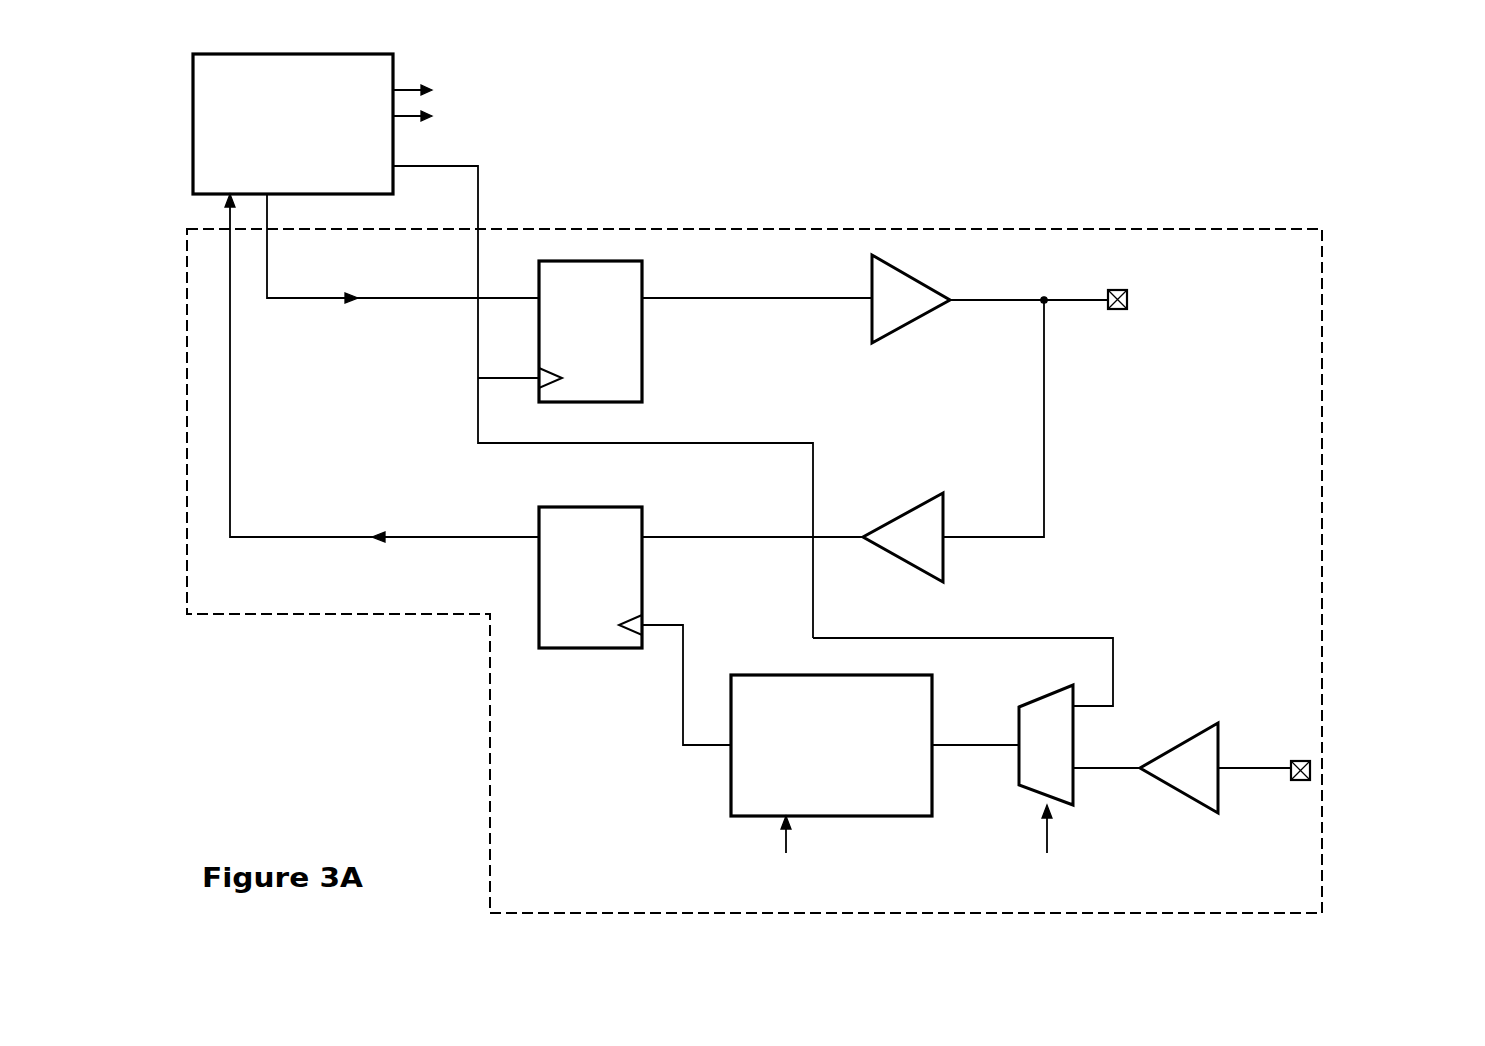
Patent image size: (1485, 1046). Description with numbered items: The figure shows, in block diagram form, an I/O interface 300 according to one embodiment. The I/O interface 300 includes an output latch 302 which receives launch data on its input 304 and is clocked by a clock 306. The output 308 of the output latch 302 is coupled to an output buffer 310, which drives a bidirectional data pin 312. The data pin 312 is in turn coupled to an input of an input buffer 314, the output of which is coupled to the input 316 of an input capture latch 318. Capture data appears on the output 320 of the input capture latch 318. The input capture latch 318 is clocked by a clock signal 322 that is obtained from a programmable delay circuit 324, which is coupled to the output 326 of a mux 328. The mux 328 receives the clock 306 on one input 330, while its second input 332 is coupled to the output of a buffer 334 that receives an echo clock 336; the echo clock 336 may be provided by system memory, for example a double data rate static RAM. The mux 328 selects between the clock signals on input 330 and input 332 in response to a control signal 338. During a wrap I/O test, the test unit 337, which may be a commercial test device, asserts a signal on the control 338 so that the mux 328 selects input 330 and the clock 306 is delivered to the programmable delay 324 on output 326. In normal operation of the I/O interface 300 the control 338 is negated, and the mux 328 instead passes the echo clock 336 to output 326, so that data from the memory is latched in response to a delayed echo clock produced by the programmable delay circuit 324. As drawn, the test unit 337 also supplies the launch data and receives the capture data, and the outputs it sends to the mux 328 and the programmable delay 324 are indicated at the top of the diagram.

The I/O interface 300 is at (413, 696).
The output latch 302 is at (613, 307).
The input 304 is at (431, 289).
The clock 306 is at (482, 187).
The output 308 is at (700, 297).
The output buffer 310 is at (920, 312).
The bidirectional data pin 312 is at (1081, 302).
The input buffer 314 is at (938, 552).
The input 316 is at (675, 527).
The input capture latch 318 is at (615, 553).
The output 320 is at (438, 536).
The clock signal 322 is at (683, 655).
The programmable delay circuit 324 is at (853, 782).
The output 326 is at (975, 740).
The mux 328 is at (1068, 758).
The input 330 is at (1120, 673).
The input 332 is at (1110, 772).
The buffer 334 is at (1213, 780).
The echo clock 336 is at (1379, 774).
The test unit 337 is at (316, 162).
The control signal 338 is at (1047, 838).